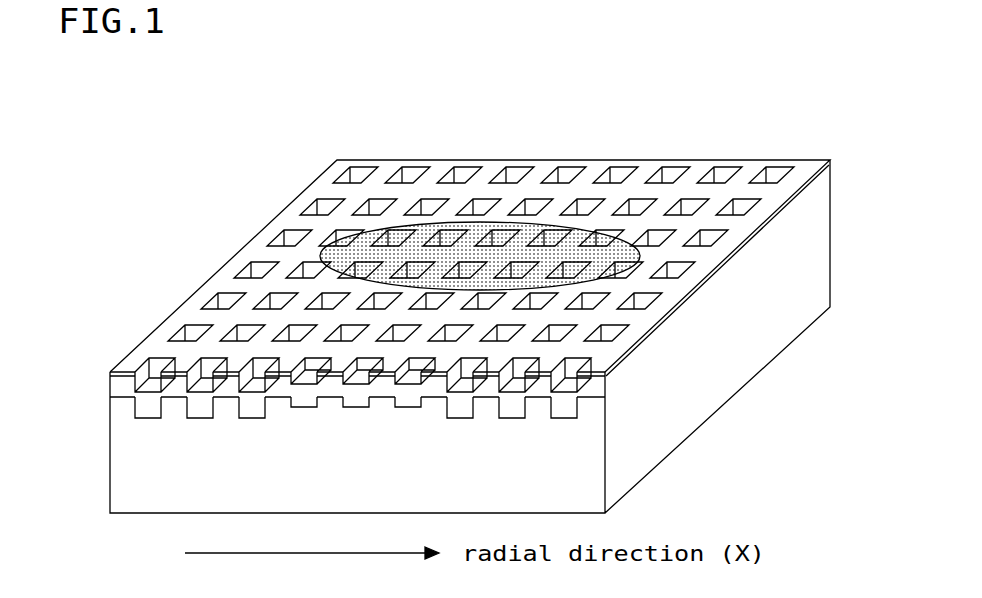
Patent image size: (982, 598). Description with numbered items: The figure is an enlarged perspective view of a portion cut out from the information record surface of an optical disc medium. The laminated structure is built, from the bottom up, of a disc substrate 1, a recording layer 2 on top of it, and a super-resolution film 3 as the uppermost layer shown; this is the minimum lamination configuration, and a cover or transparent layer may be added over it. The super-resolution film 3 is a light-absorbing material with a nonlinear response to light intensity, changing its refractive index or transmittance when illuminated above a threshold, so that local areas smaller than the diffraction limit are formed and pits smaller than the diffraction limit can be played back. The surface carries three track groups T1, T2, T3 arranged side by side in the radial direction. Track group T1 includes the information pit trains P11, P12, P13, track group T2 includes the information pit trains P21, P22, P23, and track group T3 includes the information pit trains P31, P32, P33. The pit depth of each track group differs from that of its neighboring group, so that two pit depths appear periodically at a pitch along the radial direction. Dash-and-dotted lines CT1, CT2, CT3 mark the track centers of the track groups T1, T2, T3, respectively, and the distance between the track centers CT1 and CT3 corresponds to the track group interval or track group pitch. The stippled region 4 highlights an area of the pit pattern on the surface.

The disc substrate 1 is at (127, 497).
The recording layer 2 is at (115, 388).
The super-resolution film 3 is at (110, 372).
The region of pit pattern 4 is at (327, 252).
The track group T1 is at (498, 105).
The track group T2 is at (657, 105).
The track group T3 is at (820, 105).
The information pit train P11 is at (283, 229).
The information pit train P12 is at (135, 432).
The information pit train P13 is at (387, 229).
The information pit train P21 is at (441, 229).
The information pit train P22 is at (288, 432).
The information pit train P23 is at (543, 229).
The information pit train P31 is at (602, 229).
The information pit train P32 is at (449, 432).
The information pit train P33 is at (712, 229).
The track center CT1 is at (172, 413).
The track center CT2 is at (321, 413).
The track center CT3 is at (480, 413).